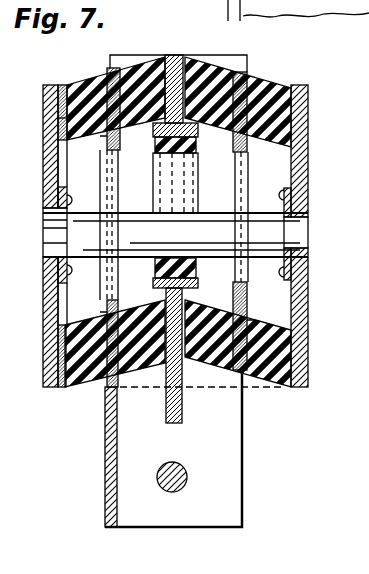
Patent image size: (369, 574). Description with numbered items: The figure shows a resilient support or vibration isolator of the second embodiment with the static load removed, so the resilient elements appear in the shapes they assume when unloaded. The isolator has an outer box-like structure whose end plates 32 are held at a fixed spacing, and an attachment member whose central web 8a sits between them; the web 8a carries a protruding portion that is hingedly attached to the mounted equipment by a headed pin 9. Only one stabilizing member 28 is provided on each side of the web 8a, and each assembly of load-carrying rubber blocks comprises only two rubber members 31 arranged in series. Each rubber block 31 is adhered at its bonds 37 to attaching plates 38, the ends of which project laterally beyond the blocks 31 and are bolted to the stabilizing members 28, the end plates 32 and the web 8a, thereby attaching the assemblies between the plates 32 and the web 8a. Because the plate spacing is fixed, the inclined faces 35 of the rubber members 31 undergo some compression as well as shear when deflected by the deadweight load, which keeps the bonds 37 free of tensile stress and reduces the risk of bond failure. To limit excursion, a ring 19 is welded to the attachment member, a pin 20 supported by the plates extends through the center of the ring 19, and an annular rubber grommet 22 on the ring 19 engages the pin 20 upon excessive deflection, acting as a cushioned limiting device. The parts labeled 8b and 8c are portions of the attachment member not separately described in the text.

The web 8a is at (181, 56).
The bracket plate 8b is at (244, 58).
The bracket rod 8c is at (105, 466).
The headed pin 9 is at (188, 483).
The ring 19 is at (196, 131).
The pin 20 is at (273, 235).
The annular rubber grommet 22 is at (193, 187).
The stabilizing member 28 is at (243, 143).
The rubber block 31 is at (94, 84).
The end plate 32 is at (45, 100).
The inclined face 35 is at (100, 138).
The bond 37 is at (70, 129).
The attaching plate 38 is at (166, 55).